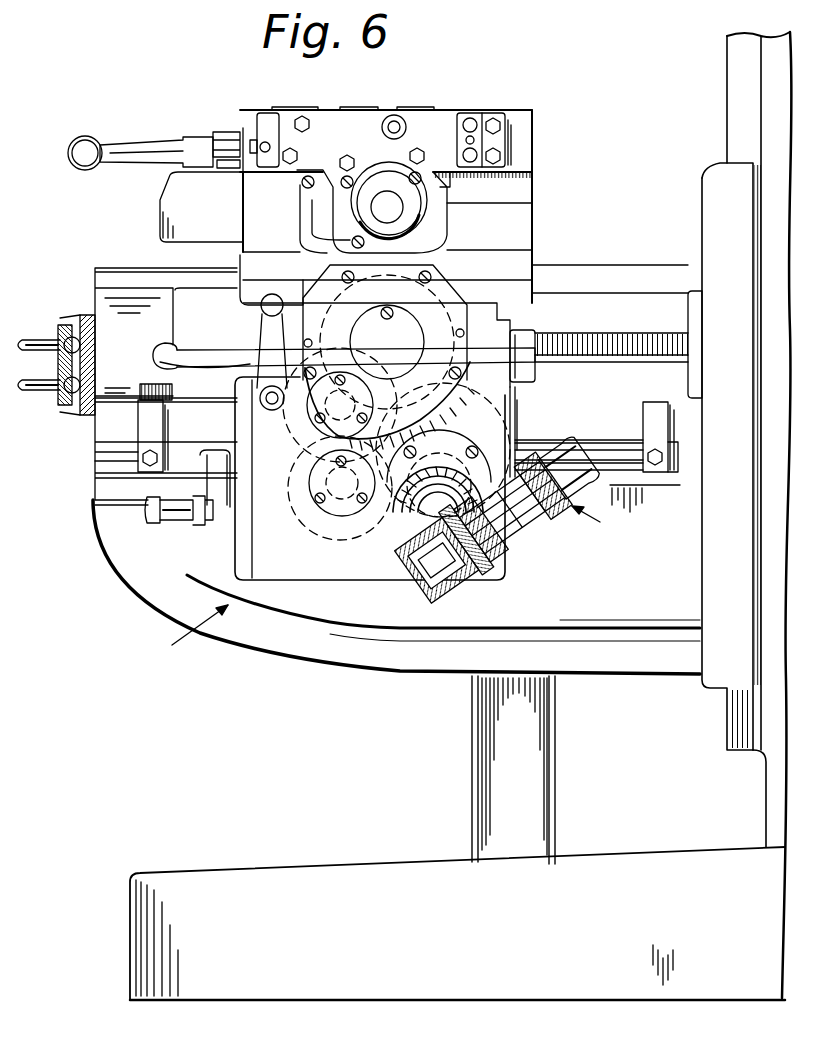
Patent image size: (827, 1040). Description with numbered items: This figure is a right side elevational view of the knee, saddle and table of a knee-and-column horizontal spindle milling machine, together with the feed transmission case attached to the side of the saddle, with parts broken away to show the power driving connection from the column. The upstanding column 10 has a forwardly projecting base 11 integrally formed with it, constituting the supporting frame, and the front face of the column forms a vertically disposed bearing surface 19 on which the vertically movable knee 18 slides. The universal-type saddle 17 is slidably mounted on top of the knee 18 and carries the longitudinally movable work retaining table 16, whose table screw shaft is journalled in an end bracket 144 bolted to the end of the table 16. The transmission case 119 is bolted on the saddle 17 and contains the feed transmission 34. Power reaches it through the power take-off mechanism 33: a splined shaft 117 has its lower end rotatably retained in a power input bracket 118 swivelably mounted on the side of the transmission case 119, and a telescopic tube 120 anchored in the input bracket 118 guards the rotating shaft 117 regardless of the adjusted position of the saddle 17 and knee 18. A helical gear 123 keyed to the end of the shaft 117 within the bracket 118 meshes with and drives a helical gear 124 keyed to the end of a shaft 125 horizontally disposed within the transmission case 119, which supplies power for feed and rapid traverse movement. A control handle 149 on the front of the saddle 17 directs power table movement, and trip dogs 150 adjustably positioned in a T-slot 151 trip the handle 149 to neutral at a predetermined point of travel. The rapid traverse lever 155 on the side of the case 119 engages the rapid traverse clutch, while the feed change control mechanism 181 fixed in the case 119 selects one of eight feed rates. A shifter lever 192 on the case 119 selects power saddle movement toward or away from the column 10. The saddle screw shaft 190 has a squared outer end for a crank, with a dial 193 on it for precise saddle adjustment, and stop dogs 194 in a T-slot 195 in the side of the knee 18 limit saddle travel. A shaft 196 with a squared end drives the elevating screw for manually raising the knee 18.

The column 10 is at (745, 124).
The base 11 is at (343, 895).
The work retaining table 16 is at (264, 110).
The saddle 17 is at (525, 214).
The knee 18 is at (275, 640).
The bearing surface 19 is at (735, 151).
The power take-off mechanism 33 is at (600, 522).
The feed transmission 34 is at (188, 634).
The splined shaft 117 is at (540, 495).
The power input bracket 118 is at (512, 436).
The transmission case 119 is at (338, 555).
The telescopic tube 120 is at (585, 488).
The helical gear 123 is at (470, 560).
The helical gear 124 is at (380, 525).
The shaft 125 is at (435, 503).
The end bracket 144 is at (440, 128).
The control handle 149 is at (120, 146).
The trip dogs 150 is at (222, 132).
The T-slot 151 is at (252, 138).
The rapid traverse lever 155 is at (195, 344).
The feed change control mechanism 181 is at (212, 532).
The saddle screw shaft 190 is at (25, 345).
The shifter lever 192 is at (284, 292).
The dial 193 is at (88, 315).
The stop dogs 194 is at (160, 413).
The T-slot 195 is at (103, 461).
The shaft 196 is at (18, 395).